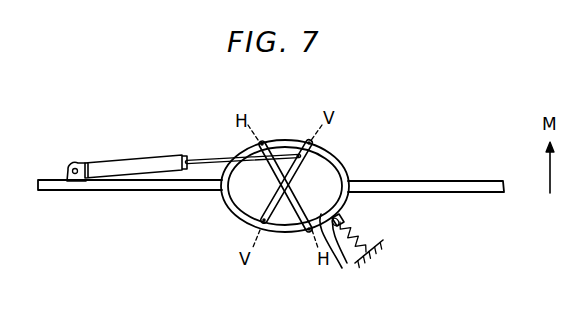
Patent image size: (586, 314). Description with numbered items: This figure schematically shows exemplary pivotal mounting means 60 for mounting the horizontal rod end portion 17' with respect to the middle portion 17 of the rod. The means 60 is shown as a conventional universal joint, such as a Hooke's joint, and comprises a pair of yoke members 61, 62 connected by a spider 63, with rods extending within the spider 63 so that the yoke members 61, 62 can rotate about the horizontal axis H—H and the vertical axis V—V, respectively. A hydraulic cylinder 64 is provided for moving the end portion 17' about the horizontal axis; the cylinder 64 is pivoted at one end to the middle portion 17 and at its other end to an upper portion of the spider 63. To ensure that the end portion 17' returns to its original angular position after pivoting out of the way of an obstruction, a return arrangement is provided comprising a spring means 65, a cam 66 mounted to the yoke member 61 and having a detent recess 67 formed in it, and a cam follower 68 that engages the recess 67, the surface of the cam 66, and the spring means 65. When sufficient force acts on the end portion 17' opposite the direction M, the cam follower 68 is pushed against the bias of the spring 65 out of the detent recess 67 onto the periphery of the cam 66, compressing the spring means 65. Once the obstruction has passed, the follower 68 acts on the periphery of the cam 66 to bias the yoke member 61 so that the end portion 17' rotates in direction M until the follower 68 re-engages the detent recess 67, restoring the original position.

The middle portion 17 is at (130, 199).
The rod end portion 17' is at (426, 169).
The mounting means 60 is at (224, 238).
The yoke member 61 is at (306, 185).
The yoke member 62 is at (230, 205).
The spider 63 is at (272, 175).
The hydraulic cylinder 64 is at (153, 161).
The spring means 65 is at (363, 232).
The cam 66 is at (327, 200).
The detent recess 67 is at (335, 255).
The cam follower 68 is at (345, 215).